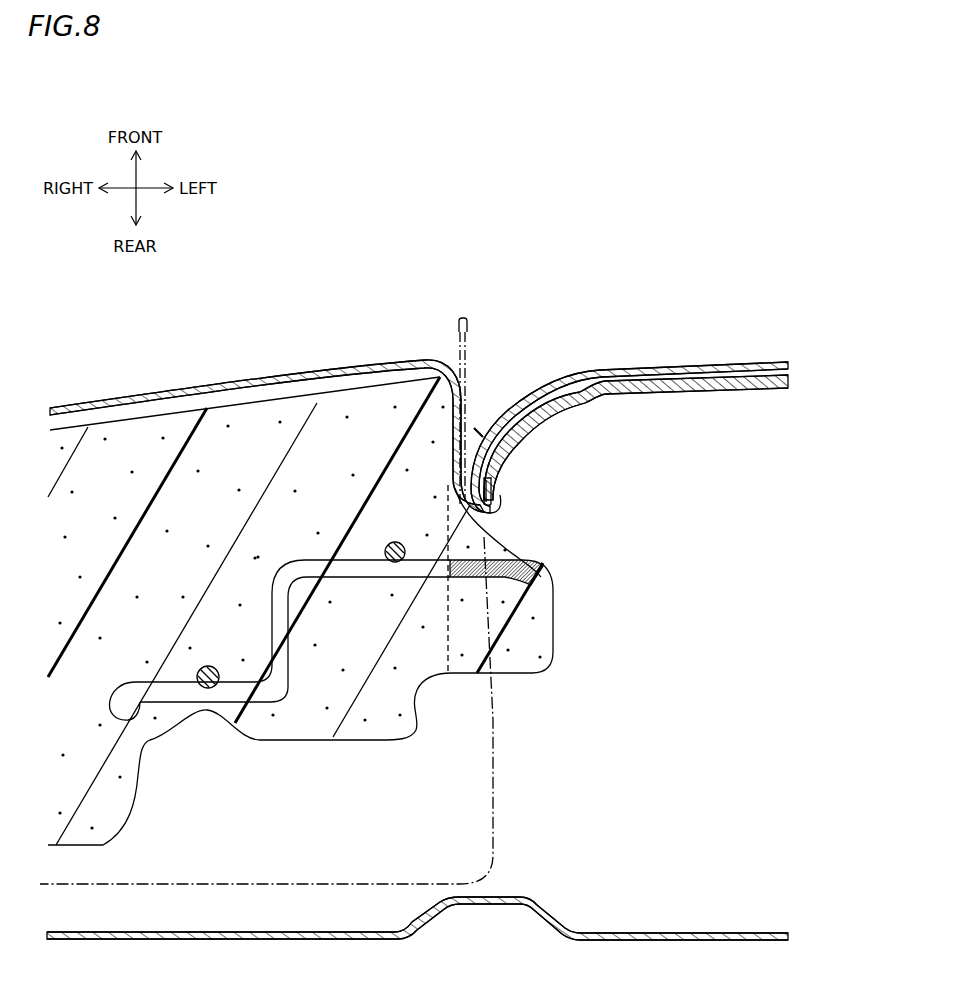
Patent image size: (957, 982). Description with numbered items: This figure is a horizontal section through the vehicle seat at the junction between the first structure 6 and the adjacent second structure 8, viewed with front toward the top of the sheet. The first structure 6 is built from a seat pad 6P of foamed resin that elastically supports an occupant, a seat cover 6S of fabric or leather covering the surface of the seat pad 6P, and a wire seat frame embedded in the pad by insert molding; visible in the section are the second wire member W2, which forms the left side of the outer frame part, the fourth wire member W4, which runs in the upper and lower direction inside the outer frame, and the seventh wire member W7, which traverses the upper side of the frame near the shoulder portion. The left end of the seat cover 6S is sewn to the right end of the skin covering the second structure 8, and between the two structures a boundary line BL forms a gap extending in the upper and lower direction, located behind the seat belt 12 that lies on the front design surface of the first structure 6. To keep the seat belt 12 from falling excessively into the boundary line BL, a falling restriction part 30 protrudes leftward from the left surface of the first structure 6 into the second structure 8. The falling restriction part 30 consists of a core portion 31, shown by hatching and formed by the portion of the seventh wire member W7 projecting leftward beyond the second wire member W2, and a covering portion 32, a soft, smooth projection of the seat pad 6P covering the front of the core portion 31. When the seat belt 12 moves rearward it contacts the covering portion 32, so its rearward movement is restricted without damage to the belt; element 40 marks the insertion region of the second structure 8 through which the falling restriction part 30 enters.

The first structure 6 is at (295, 566).
The seat cover 6S is at (142, 393).
The seat pad 6P is at (252, 435).
The second structure 8 is at (702, 350).
The seat belt 12 is at (463, 314).
The boundary line BL is at (479, 430).
The clip 40 is at (490, 510).
The falling restriction part 30 is at (525, 545).
The core portion 31 is at (545, 575).
The covering portion 32 is at (540, 603).
The second wire member W2 is at (396, 542).
The fourth wire member W4 is at (209, 666).
The seventh wire member W7 is at (365, 577).